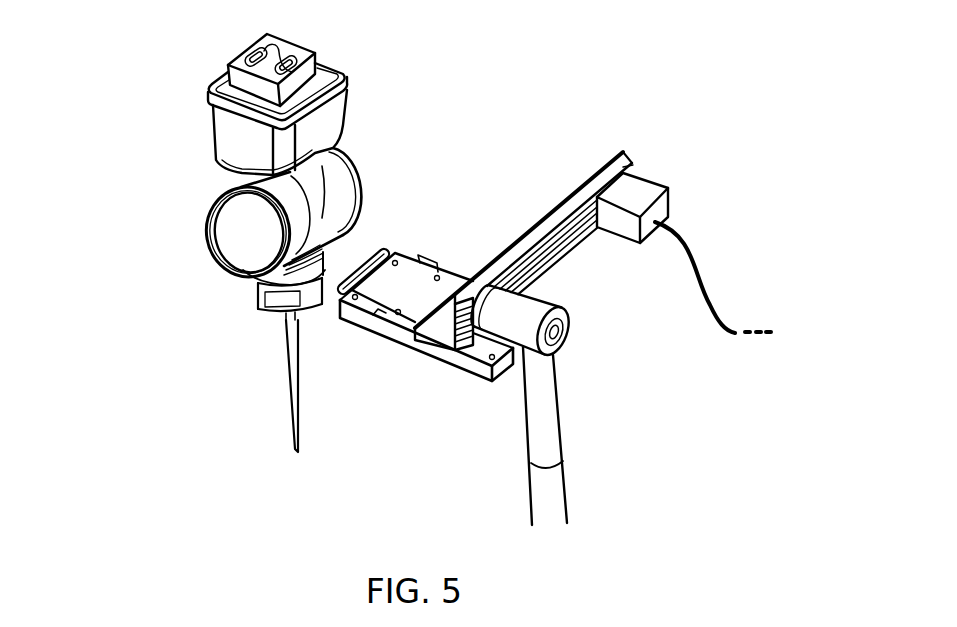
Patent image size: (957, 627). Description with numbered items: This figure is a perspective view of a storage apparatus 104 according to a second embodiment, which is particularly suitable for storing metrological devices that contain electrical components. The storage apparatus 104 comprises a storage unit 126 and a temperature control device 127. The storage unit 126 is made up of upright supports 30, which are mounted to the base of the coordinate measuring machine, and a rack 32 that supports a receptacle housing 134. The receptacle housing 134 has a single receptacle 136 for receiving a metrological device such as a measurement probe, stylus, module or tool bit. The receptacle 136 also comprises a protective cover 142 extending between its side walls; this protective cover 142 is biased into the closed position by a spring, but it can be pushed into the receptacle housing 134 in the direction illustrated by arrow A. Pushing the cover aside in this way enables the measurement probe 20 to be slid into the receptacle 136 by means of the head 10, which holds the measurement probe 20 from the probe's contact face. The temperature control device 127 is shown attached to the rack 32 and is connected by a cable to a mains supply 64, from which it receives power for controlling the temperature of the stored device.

The head 10 is at (192, 53).
The measurement probe 20 is at (248, 283).
The arrow A is at (146, 247).
The storage apparatus 104 is at (700, 139).
The rack 32 is at (537, 230).
The temperature control device 127 is at (663, 209).
The mains supply 64 is at (709, 300).
The storage unit 126 is at (592, 295).
The upright supports 30 is at (553, 445).
The receptacle housing 134 is at (443, 359).
The protective cover 142 is at (413, 277).
The receptacle 136 is at (366, 246).